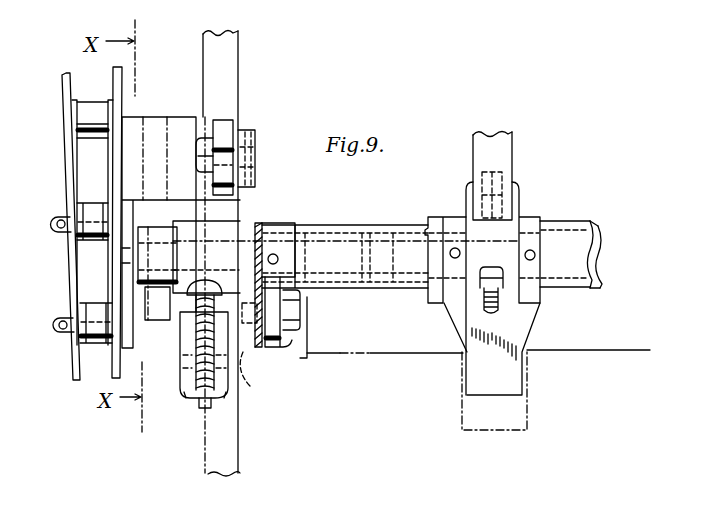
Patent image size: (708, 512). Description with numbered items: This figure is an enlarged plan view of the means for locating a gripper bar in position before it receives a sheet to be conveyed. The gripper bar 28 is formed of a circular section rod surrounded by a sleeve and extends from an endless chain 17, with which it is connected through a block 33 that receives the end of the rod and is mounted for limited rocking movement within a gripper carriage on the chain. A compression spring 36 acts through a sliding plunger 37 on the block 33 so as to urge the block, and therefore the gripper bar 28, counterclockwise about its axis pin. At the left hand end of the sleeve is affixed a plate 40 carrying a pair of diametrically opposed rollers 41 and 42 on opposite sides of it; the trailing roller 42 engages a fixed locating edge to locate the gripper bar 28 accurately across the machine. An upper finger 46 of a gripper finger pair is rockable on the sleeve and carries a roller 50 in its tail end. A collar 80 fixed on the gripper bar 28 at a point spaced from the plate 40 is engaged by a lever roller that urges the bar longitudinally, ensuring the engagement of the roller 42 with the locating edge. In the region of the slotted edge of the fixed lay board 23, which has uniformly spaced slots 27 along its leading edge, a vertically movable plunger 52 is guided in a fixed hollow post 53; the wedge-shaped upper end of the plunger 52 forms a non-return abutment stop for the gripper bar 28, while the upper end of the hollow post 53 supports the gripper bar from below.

The endless chain 17 is at (72, 170).
The lay board 23 is at (475, 360).
The slot 27 is at (500, 418).
The gripper bar 28 is at (553, 238).
The block 33 is at (218, 227).
The compression spring 36 is at (195, 327).
The sliding plunger 37 is at (197, 370).
The plate 40 is at (243, 190).
The roller 41 is at (225, 120).
The roller 42 is at (278, 348).
The upper finger 46 is at (486, 372).
The roller 50 is at (472, 177).
The plunger 52 is at (230, 72).
The hollow post 53 is at (300, 352).
The collar 80 is at (425, 233).